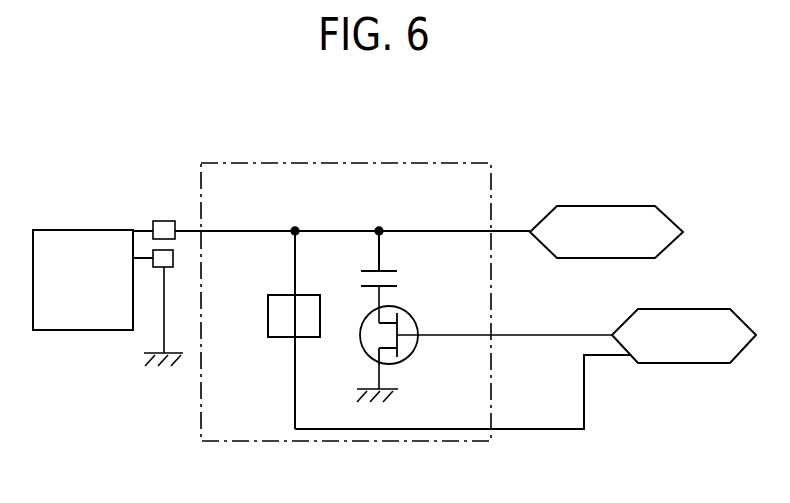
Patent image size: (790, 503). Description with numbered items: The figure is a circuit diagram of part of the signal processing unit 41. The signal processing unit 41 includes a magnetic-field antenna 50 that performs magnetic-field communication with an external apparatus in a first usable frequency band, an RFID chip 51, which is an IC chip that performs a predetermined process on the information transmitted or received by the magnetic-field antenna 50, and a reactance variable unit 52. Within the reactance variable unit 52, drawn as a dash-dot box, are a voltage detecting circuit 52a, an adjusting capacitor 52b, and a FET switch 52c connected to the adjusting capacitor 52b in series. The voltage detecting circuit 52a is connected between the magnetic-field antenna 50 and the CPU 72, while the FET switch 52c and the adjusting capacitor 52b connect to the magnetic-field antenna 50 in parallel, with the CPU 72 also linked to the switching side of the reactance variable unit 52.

The signal processing unit 41 is at (655, 158).
The magnetic-field antenna 50 is at (70, 229).
The RFID chip 51 is at (661, 210).
The reactance variable unit 52 is at (447, 163).
The voltage detecting circuit 52a is at (281, 295).
The adjusting capacitor 52b is at (400, 279).
The FET switch 52c is at (410, 316).
The CPU 72 is at (733, 311).